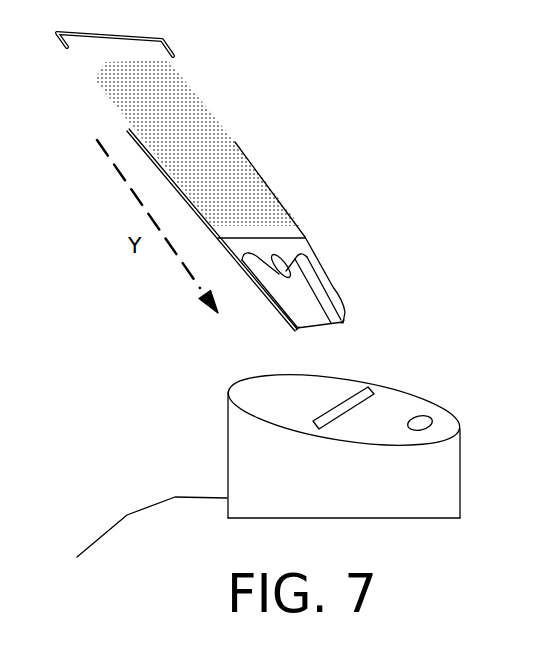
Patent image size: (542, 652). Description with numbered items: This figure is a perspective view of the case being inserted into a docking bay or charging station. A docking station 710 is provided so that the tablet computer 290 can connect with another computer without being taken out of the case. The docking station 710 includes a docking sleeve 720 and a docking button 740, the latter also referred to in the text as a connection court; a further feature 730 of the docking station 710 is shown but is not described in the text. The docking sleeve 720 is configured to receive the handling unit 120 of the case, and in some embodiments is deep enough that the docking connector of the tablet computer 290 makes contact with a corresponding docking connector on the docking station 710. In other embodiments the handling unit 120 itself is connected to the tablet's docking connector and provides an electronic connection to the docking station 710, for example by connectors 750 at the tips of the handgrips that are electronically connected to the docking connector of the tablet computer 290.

The handling unit 120 is at (334, 275).
The tablet computer 290 is at (207, 105).
The docking station 710 is at (227, 430).
The docking sleeve 720 is at (324, 417).
The hole 730 is at (435, 425).
The docking button 740 is at (120, 510).
The connectors 750 is at (296, 333).